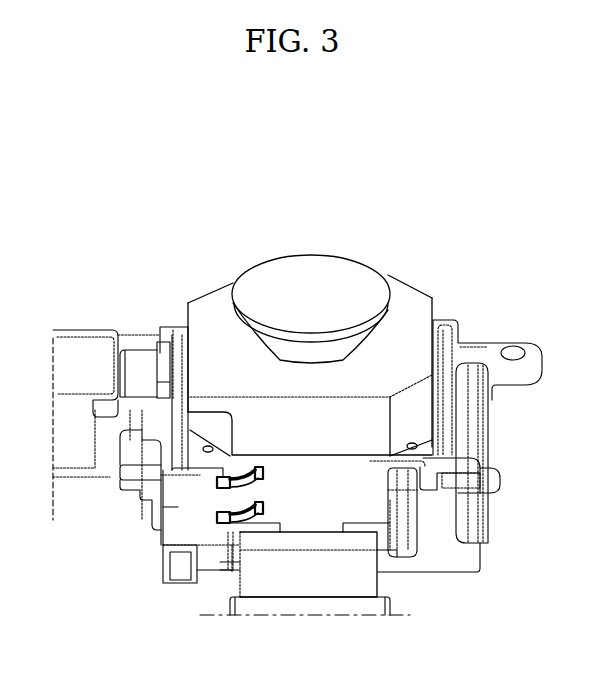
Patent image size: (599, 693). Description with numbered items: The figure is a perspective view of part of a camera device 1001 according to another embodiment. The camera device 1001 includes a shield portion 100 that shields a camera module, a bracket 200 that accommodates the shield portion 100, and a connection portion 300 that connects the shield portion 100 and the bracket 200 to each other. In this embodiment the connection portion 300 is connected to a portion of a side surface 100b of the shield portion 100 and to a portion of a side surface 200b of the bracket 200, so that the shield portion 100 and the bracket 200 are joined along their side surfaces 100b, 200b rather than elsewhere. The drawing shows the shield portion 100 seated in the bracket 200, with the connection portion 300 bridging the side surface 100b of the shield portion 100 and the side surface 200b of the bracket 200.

The camera device 1001 is at (442, 231).
The shield portion 100 is at (204, 307).
The side surface of the shield portion 100b is at (305, 497).
The bracket 200 is at (143, 433).
The side surface of the bracket 200b is at (176, 507).
The connection portion 300 is at (233, 483).